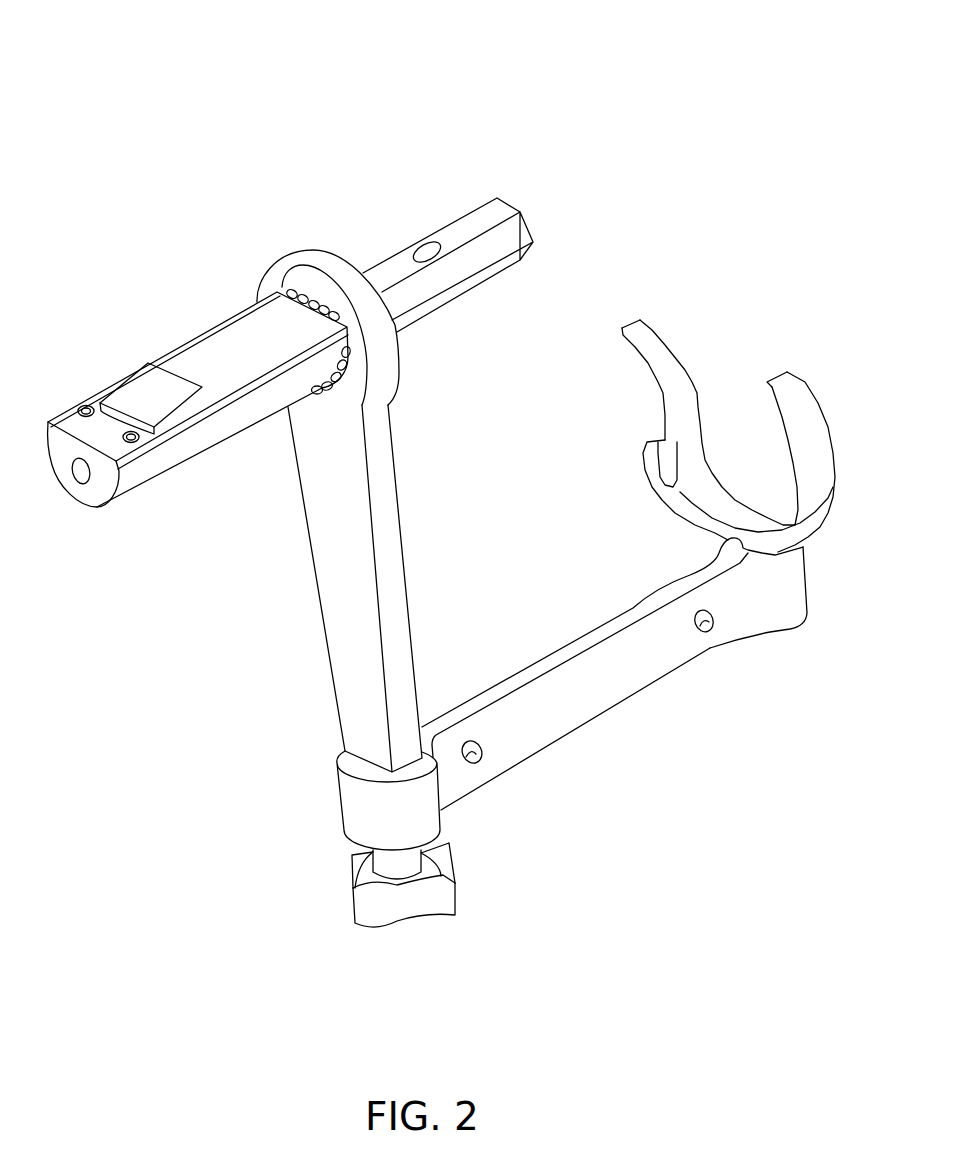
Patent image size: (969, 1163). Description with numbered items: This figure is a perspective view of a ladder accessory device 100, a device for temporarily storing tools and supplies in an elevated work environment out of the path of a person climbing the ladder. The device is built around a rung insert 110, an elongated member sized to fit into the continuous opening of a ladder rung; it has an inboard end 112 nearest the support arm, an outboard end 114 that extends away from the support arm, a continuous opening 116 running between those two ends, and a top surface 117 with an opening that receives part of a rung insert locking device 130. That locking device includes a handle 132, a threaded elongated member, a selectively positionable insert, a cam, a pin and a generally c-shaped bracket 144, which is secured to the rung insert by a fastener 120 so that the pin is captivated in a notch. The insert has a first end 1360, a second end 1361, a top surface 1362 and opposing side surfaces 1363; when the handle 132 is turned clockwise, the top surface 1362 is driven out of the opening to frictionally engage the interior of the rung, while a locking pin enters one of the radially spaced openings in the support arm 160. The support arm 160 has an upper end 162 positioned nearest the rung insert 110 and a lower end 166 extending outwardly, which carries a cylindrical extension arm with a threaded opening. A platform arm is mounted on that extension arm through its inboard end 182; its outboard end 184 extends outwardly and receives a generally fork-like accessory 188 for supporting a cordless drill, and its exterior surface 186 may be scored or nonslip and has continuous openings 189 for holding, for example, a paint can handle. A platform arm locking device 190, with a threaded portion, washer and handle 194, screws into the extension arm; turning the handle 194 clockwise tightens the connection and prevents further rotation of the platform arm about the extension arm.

The ladder accessory device 100 is at (185, 143).
The rung insert 110 is at (242, 307).
The inboard end 112 is at (285, 308).
The outboard end 114 is at (62, 450).
The continuous opening 116 is at (79, 478).
The top surface 117 is at (248, 362).
The fastener 120 is at (84, 405).
The rung insert locking device 130 is at (150, 363).
The handle 132 is at (496, 208).
The bracket 144 is at (95, 398).
The support arm 160 is at (407, 567).
The upper end 162 is at (323, 435).
The lower end 166 is at (360, 727).
The inboard end 182 is at (450, 772).
The outboard end 184 is at (735, 602).
The exterior surface 186 is at (589, 696).
The accessory 188 is at (678, 372).
The continuous openings 189 is at (709, 624).
The platform arm locking device 190 is at (403, 913).
The handle 194 is at (353, 905).
The first end 1360 is at (160, 363).
The second end 1361 is at (122, 410).
The top surface 1362 is at (180, 401).
The opposing side surfaces 1363 is at (200, 397).